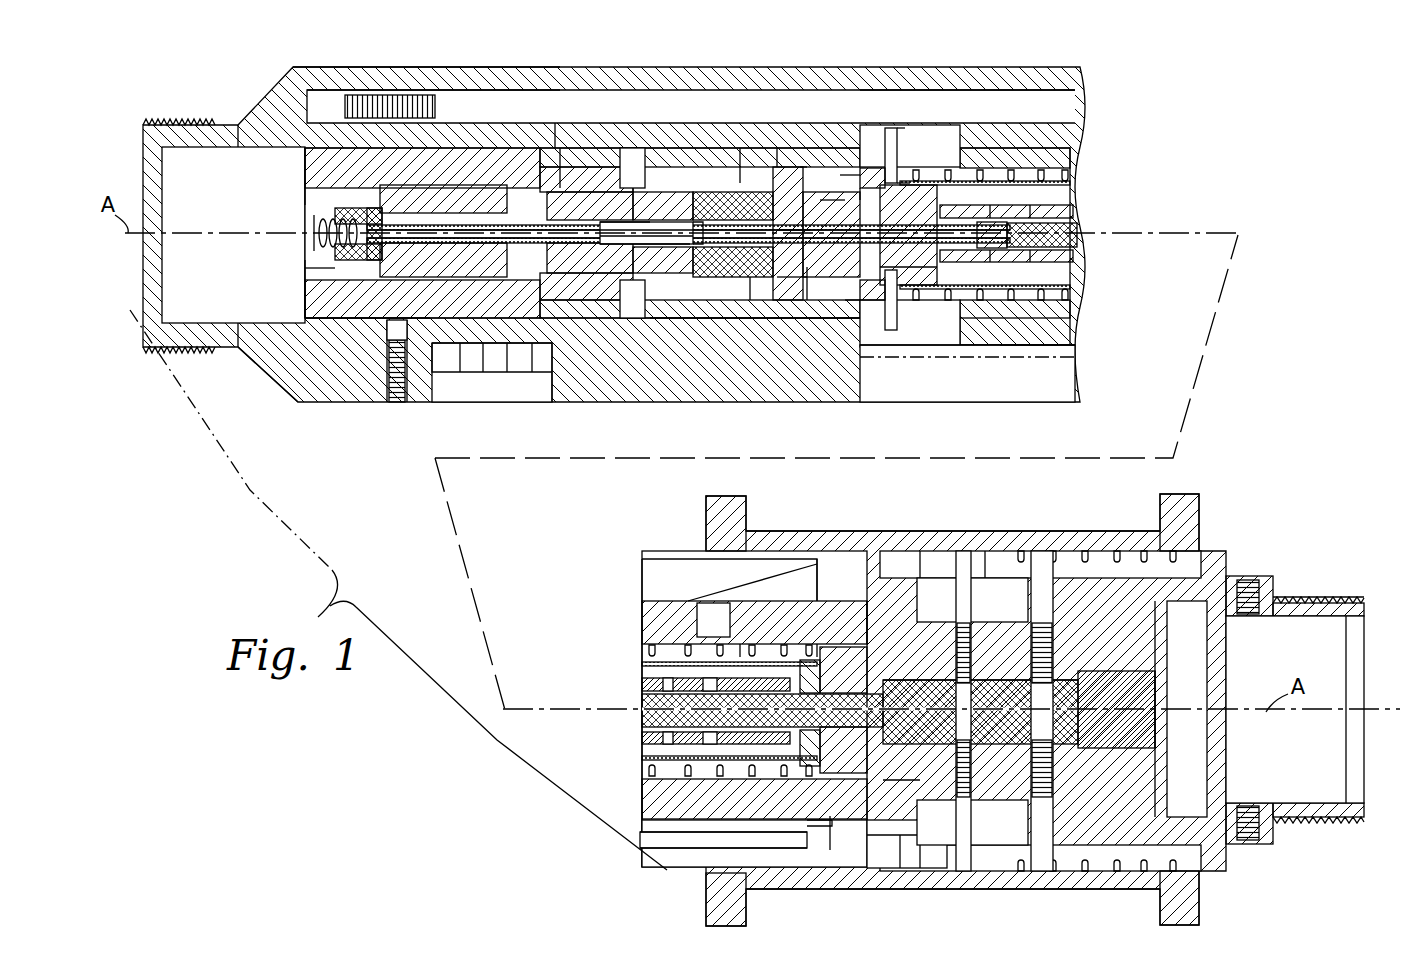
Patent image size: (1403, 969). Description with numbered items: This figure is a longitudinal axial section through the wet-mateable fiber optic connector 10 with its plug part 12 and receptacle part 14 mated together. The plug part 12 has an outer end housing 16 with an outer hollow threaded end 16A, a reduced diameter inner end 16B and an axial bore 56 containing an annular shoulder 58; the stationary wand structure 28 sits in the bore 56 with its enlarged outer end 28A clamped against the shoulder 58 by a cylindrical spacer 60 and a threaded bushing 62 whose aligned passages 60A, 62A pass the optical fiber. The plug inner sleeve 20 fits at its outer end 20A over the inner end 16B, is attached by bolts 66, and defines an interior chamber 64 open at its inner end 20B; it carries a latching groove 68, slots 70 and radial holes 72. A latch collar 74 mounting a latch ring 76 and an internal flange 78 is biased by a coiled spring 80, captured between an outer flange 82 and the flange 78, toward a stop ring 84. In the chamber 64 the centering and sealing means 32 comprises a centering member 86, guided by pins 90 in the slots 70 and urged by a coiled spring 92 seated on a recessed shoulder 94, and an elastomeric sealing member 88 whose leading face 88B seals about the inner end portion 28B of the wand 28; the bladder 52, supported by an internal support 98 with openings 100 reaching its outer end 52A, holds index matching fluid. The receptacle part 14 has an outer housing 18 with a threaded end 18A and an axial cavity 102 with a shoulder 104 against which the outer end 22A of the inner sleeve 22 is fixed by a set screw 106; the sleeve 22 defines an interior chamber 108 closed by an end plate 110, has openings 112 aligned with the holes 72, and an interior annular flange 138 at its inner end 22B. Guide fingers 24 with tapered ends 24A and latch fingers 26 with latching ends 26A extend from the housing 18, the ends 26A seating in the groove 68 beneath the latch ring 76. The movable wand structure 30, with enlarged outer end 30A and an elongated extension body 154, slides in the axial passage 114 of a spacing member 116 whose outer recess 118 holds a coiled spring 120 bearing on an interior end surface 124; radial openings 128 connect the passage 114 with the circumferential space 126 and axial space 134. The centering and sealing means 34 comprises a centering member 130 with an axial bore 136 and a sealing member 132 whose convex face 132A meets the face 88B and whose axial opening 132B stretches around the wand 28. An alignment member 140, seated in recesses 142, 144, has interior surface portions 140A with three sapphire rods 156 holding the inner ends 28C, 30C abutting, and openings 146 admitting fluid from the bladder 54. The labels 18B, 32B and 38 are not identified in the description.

The wet-mateable fiber optic connector 10 is at (1232, 347).
The plug part 12 is at (1219, 542).
The receptacle part 14 is at (1082, 112).
The plug part outer end housing 16 is at (1270, 847).
The outer hollow threaded end 16A is at (1296, 600).
The reduced diameter inner end 16B is at (945, 560).
The receptacle part outer end housing 18 is at (327, 402).
The outer hollow threaded end 18A is at (252, 358).
The plug body 18B is at (500, 78).
The plug part inner sleeve 20 is at (1008, 348).
The outer end of plug inner sleeve 20A is at (888, 660).
The inner end of plug inner sleeve 20B is at (690, 345).
The receptacle part inner sleeve 22 is at (790, 158).
The outer end of receptacle inner sleeve 22A is at (388, 95).
The inner end of receptacle inner sleeve 22B is at (842, 175).
The guide fingers 24 is at (860, 90).
The forward tapered ends of guide fingers 24A is at (770, 580).
The latch fingers 26 is at (848, 330).
The latching ends of latch fingers 26A is at (828, 840).
The stationary wand structure 28 is at (805, 657).
The enlarged diameter outer end of stationary wand structure 28A is at (887, 822).
The inner end portion of stationary wand structure 28B is at (945, 150).
The inner end of stationary wand structure 28C is at (790, 300).
The movable wand structure 30 is at (445, 345).
The enlarged diameter outer end of movable wand structure 30A is at (385, 400).
The inner end of movable wand structure 30C is at (688, 150).
The plug part centering and sealing means 32 is at (840, 330).
The bore end 32B is at (645, 148).
The receptacle part centering and sealing means 34 is at (803, 165).
The retaining ring 38 is at (562, 150).
The pressure compensating bladder of plug part 52 is at (1090, 176).
The outer end of plug bladder 52A is at (852, 690).
The pressure compensating bladder of receptacle part 54 is at (563, 148).
The axial bore 56 is at (1095, 748).
The annular shoulder 58 is at (876, 705).
The inner cylindrical spacer 60 is at (1078, 662).
The axial passage of spacer 60A is at (1015, 745).
The externally-threaded bushing 62 is at (1148, 660).
The axial passage of bushing 62A is at (1143, 750).
The interior chamber of plug inner sleeve 64 is at (1065, 330).
The bolts 66 is at (975, 600).
The annular exterior latching groove 68 is at (850, 790).
The elongated slots 70 is at (980, 190).
The radial holes 72 is at (630, 150).
The latch collar 74 is at (1060, 531).
The latch ring 76 is at (838, 560).
The middle internal flange 78 is at (985, 565).
The coiled spring 80 is at (1170, 494).
The outer flange 82 is at (1200, 880).
The stop ring 84 is at (975, 870).
The centering member 86 is at (1040, 222).
The sealing member 88 is at (915, 345).
The leading face of sealing member 88B is at (840, 296).
The pins 90 is at (900, 150).
The coiled spring 92 is at (645, 650).
The annular recessed shoulder 94 is at (895, 740).
The elongated internal support 98 is at (1075, 212).
The openings in support 100 is at (650, 742).
The axial cavity 102 is at (691, 106).
The annular shoulder 104 is at (444, 90).
The set screw 106 is at (397, 402).
The interior chamber of receptacle inner sleeve 108 is at (515, 398).
The end plate 110 is at (305, 277).
The circumferentially spaced openings 112 is at (632, 148).
The axial passage of spacing member 114 is at (505, 185).
The cylindrical spacing member 116 is at (560, 280).
The outer recess of spacing member 118 is at (305, 213).
The coiled spring 120 is at (318, 242).
The interior end surface 124 is at (335, 226).
The circumferential space 126 is at (560, 385).
The radial openings 128 is at (555, 222).
The centering member 130 is at (760, 277).
The sealing member 132 is at (822, 198).
The leading convex face 132A is at (900, 128).
The axial opening of sealing member 132B is at (750, 292).
The axial space 134 is at (675, 222).
The axial bore of centering member 136 is at (830, 192).
The interior annular flange 138 is at (985, 170).
The alignment member 140 is at (688, 300).
The interior surface portions of alignment member 140A is at (715, 318).
The recess in spacing member inner portion 142 is at (662, 290).
The recess in centering member 144 is at (785, 167).
The openings in alignment member 146 is at (740, 148).
The extension body 154 is at (640, 300).
The sapphire rods 156 is at (742, 280).